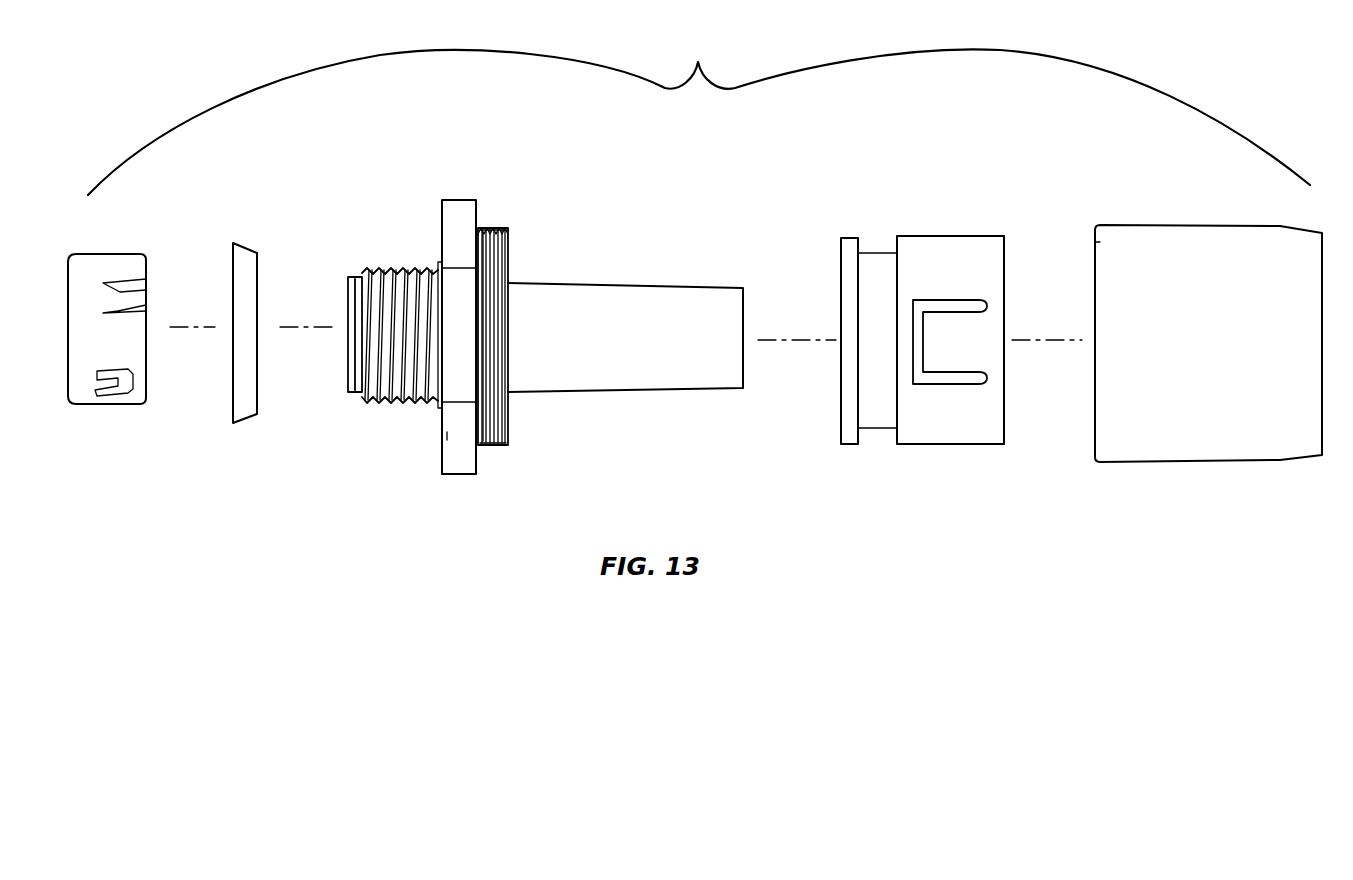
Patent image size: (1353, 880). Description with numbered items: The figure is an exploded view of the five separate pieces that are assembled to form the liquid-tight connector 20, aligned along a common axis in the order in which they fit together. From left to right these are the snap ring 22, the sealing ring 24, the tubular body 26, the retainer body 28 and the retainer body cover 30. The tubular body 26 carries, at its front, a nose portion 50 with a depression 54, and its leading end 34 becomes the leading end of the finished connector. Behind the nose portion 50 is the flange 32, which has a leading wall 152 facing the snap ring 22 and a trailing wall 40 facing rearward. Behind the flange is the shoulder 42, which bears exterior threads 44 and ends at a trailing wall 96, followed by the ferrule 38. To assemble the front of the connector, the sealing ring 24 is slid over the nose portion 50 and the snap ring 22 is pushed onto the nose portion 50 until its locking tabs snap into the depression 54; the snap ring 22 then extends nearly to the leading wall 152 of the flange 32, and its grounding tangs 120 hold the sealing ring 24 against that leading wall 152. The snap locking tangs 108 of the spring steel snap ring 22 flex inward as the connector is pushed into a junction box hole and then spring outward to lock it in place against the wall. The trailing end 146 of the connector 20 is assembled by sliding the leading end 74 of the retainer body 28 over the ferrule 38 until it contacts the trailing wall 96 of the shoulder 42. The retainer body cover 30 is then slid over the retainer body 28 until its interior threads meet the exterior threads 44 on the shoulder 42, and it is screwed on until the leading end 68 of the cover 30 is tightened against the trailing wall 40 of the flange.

The liquid-tight connector 20 is at (698, 62).
The snap ring 22 is at (144, 375).
The sealing ring 24 is at (252, 429).
The tubular body 26 is at (559, 312).
The retainer body 28 is at (899, 372).
The retainer body cover 30 is at (1165, 361).
The flange 32 is at (465, 215).
The leading end of the tubular body 34 is at (348, 371).
The ferrule 38 is at (662, 352).
The trailing wall of the flange 40 is at (479, 216).
The shoulder 42 is at (492, 228).
The exterior threads 44 is at (486, 447).
The nose portion 50 is at (367, 272).
The depression 54 is at (395, 272).
The leading end of the cover 68 is at (1098, 245).
The leading end of the retainer body 74 is at (840, 275).
The trailing wall of the shoulder 96 is at (508, 255).
The snap locking tangs 108 is at (155, 367).
The grounding tangs 120 is at (138, 291).
The trailing end of the connector 146 is at (743, 370).
The leading wall of the flange 152 is at (447, 434).